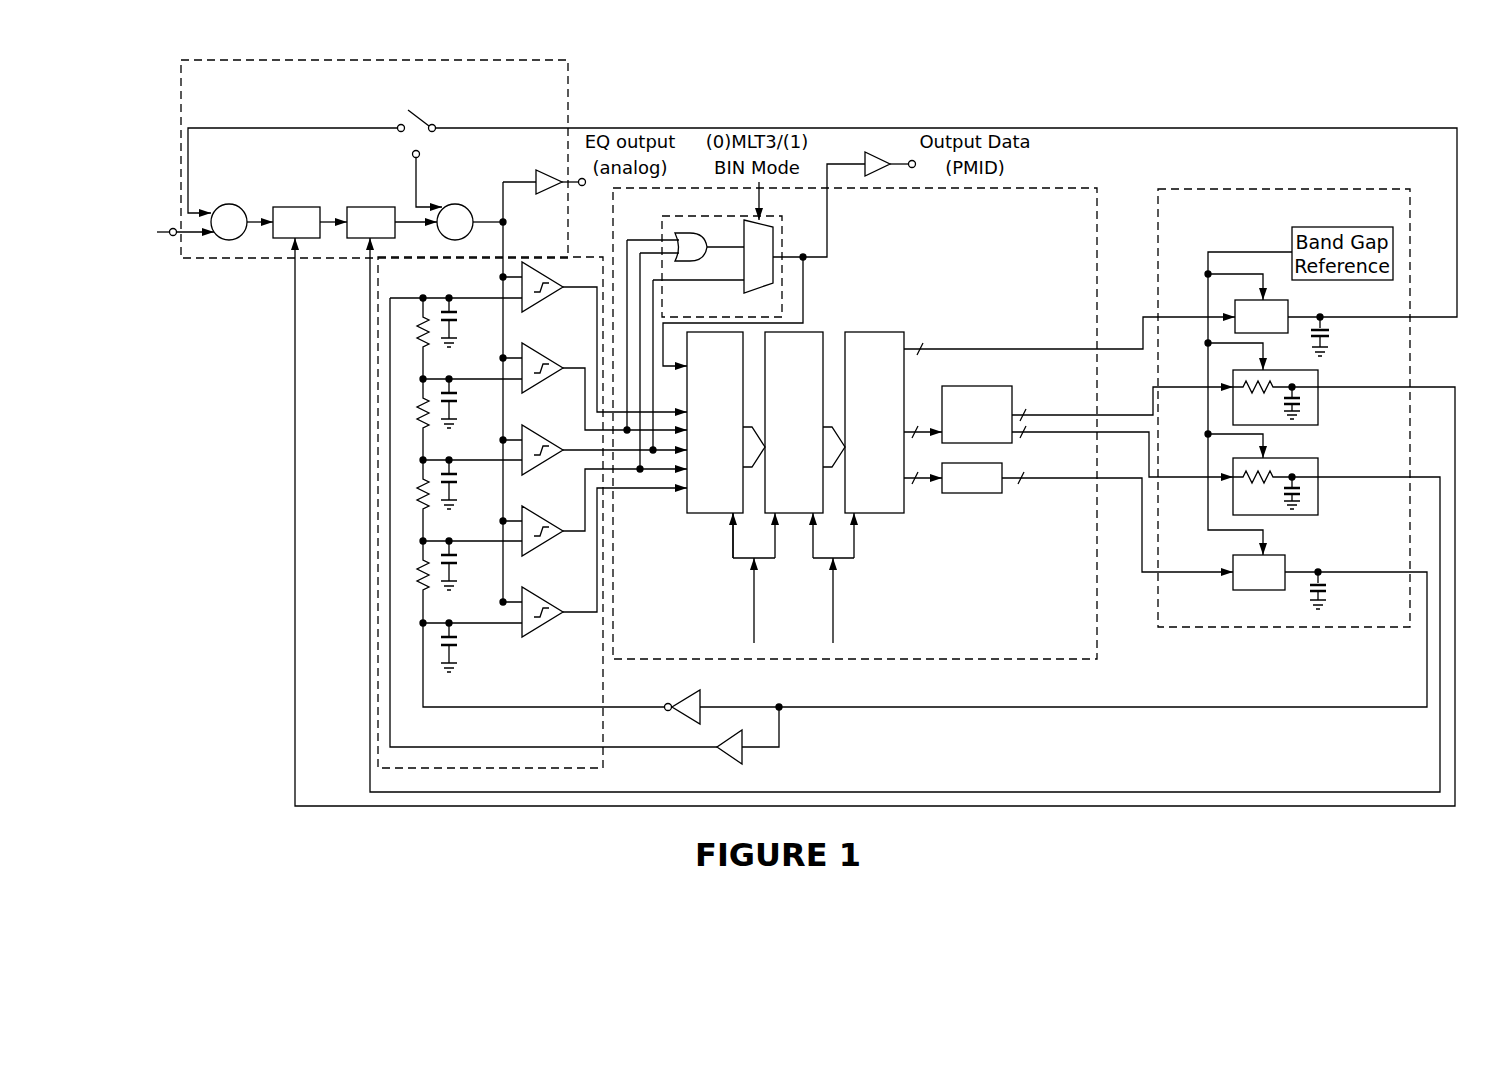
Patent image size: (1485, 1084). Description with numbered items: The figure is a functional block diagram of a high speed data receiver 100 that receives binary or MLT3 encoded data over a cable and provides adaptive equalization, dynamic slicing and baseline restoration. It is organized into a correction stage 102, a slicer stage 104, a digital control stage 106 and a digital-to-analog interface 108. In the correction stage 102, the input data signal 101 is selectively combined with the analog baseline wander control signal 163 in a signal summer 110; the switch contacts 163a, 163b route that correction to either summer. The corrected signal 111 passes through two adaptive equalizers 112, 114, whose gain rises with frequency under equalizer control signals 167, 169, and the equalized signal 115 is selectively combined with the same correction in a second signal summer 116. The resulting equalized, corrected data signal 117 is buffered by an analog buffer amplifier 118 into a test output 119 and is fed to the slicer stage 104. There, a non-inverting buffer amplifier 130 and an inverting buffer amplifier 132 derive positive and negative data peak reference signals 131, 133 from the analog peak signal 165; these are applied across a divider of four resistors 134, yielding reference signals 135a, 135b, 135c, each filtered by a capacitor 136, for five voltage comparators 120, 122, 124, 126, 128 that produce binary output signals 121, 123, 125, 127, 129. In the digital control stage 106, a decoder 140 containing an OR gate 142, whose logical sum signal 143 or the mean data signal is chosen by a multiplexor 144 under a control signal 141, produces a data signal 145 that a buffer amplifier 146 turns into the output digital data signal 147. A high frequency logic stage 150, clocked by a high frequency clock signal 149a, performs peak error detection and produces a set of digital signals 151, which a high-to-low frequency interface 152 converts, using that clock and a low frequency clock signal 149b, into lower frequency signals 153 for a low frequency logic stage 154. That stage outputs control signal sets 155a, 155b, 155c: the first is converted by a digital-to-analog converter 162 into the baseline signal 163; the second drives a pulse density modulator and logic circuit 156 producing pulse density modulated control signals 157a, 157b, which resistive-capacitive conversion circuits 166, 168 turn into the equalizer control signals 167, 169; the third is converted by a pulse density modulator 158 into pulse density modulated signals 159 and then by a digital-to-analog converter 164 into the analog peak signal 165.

The high speed data receiver 100 is at (374, 836).
The input data signal 101 is at (168, 240).
The correction stage 102 is at (570, 94).
The slicer stage 104 is at (603, 760).
The digital control stage 106 is at (1030, 188).
The digital-to-analog interface 108 is at (1248, 189).
The signal summer 110 is at (222, 205).
The corrected signal 111 is at (252, 216).
The adaptive equalizer 112 is at (300, 207).
The adaptive equalizer 114 is at (356, 207).
The equalized signal 115 is at (398, 226).
The signal summer 116 is at (456, 204).
The equalized, corrected data signal 117 is at (508, 242).
The analog buffer amplifier 118 is at (535, 176).
The analog equalized, corrected output data signal 119 is at (582, 186).
The positive peak voltage comparator 120 is at (536, 316).
The binary output signal 121 is at (578, 290).
The positive level comparator 122 is at (536, 397).
The positive data signal 123 is at (576, 374).
The middle comparator 124 is at (536, 479).
The mean data signal 125 is at (590, 446).
The negative level comparator 126 is at (536, 560).
The negative data signal 127 is at (560, 526).
The negative peak voltage comparator 128 is at (536, 641).
The binary output signal 129 is at (592, 608).
The non-inverting buffer amplifier 130 is at (727, 759).
The positive data peak reference signal 131 is at (434, 749).
The inverting buffer amplifier 132 is at (687, 694).
The negative data peak reference signal 133 is at (466, 710).
The resistor 134 is at (430, 350).
The positive reference signal 135a is at (423, 379).
The middle reference signal 135b is at (423, 460).
The negative reference signal 135c is at (423, 541).
The capacitor 136 is at (458, 320).
The decoder 140 is at (682, 216).
The control signal 141 is at (762, 196).
The OR gate 142 is at (674, 236).
The logical sum signal 143 is at (709, 241).
The multiplexor 144 is at (752, 290).
The data signal 145 is at (794, 254).
The buffer amplifier 146 is at (880, 148).
The output digital data signal 147 is at (915, 158).
The high frequency clock signal 149a is at (752, 603).
The low frequency clock signal 149b is at (836, 603).
The high frequency logic stage 150 is at (694, 516).
The set of digital signals 151 is at (747, 516).
The high-to-low frequency interface 152 is at (808, 332).
The set of lower frequency signals 153 is at (827, 516).
The low frequency logic stage 154 is at (864, 332).
The set of control signals 155a is at (912, 344).
The set of control signals 155b is at (921, 424).
The set of control signals 155c is at (912, 484).
The pulse density modulator and logic circuit 156 is at (986, 386).
The pulse density modulated control signal 157a is at (1052, 412).
The pulse density modulated control signal 157b is at (1061, 434).
The pulse density modulator 158 is at (967, 494).
The set of pulse density modulated signals 159 is at (1030, 484).
The digital-to-analog converter 162 is at (1288, 311).
The analog baseline wander control signal 163 is at (1356, 318).
The BLW switch 163a is at (398, 124).
The BLW switch terminal 163b is at (412, 156).
The digital-to-analog converter 164 is at (1286, 567).
The analog peak signal 165 is at (1352, 574).
The resistive-capacitive digital-to-analog conversion circuit 166 is at (1320, 392).
The equalizer control signal 167 is at (1376, 392).
The resistive-capacitive digital-to-analog conversion circuit 168 is at (1320, 480).
The equalizer control signal 169 is at (1350, 476).